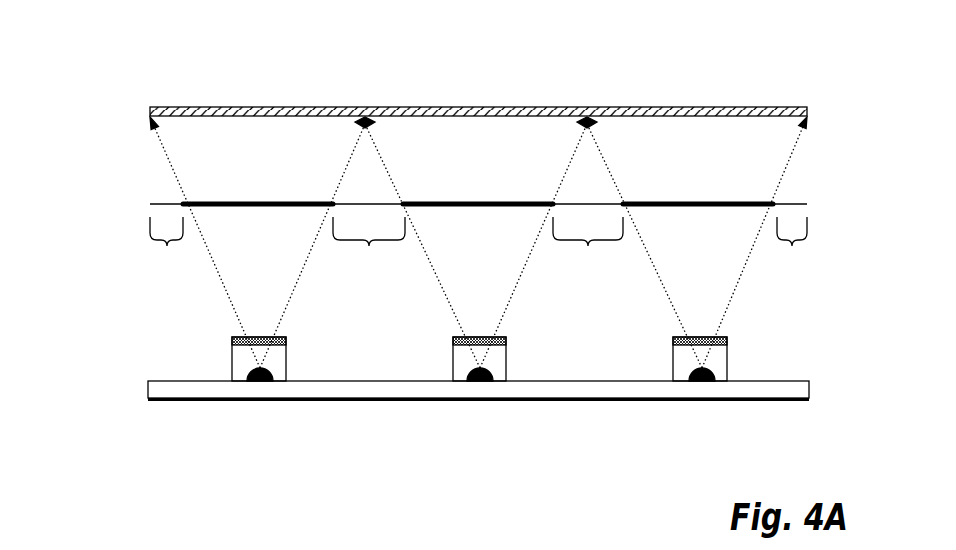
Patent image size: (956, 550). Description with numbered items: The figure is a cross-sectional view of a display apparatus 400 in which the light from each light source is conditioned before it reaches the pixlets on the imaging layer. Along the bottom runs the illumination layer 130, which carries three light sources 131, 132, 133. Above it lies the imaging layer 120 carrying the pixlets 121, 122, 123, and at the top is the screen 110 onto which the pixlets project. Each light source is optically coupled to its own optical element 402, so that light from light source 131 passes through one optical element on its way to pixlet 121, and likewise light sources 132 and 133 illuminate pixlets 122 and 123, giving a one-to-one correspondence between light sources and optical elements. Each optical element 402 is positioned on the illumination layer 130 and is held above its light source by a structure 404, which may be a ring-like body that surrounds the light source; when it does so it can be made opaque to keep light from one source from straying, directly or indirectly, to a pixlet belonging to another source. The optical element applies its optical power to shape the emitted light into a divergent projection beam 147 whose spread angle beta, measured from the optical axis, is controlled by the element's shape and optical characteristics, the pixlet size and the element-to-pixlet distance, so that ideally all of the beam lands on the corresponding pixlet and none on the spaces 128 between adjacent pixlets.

The display apparatus 400 is at (788, 50).
The reflector plate 110 is at (110, 112).
The converter layer 120 is at (112, 205).
The pixlet 121 is at (268, 204).
The pixlet 122 is at (483, 204).
The pixlet 123 is at (703, 204).
The gap between converter segments 128 is at (478, 256).
The divergent projection beam 147 is at (223, 272).
The illumination layer 130 is at (112, 391).
The light source 131 is at (258, 383).
The light source 132 is at (479, 383).
The light source 133 is at (700, 383).
The optical element 402 is at (232, 341).
The structure 404 is at (286, 372).